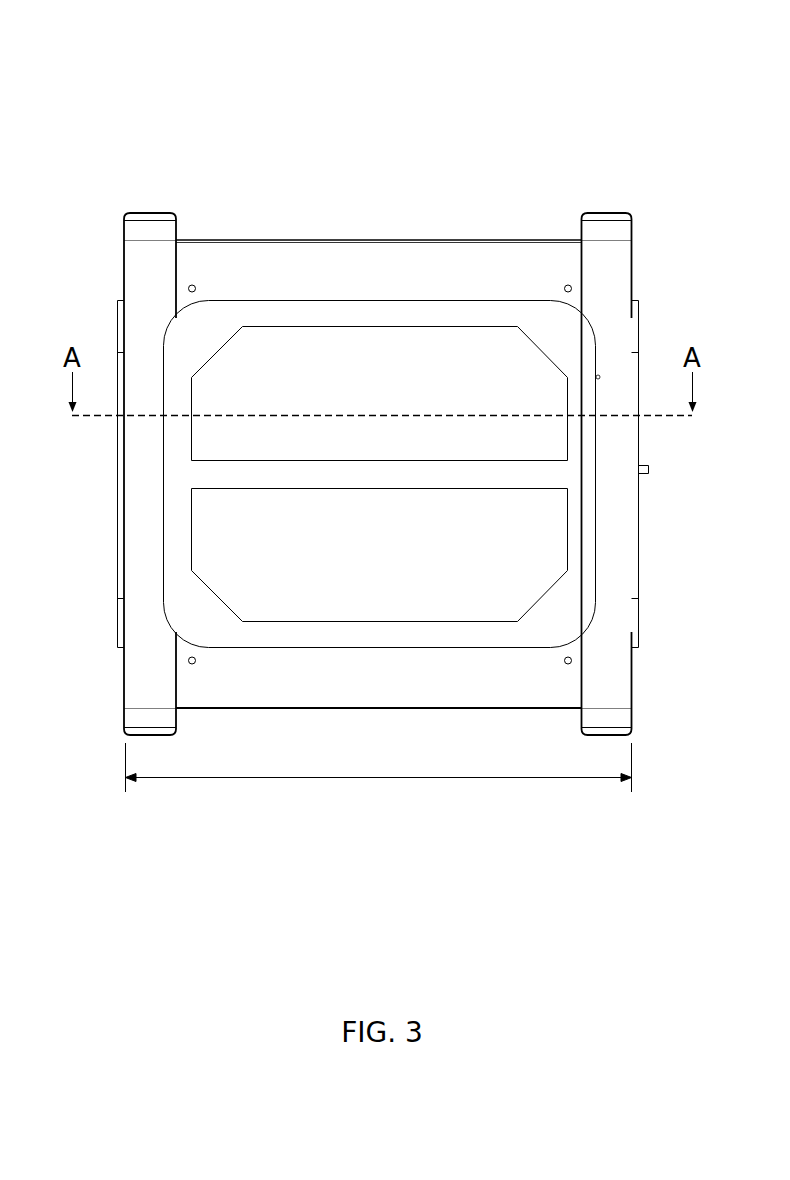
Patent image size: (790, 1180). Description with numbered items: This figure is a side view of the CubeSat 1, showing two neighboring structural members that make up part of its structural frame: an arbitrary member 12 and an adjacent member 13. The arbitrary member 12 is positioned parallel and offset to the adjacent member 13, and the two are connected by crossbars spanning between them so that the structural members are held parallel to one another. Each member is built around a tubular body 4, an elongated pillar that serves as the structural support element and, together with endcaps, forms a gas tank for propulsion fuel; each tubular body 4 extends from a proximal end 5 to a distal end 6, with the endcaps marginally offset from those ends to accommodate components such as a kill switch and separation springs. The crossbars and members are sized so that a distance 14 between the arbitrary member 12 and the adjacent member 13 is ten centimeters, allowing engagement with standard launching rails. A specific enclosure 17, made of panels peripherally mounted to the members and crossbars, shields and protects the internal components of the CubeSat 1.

The CubeSat 1 is at (420, 105).
The tubular body 4 is at (130, 514).
The proximal end 5 is at (86, 705).
The distal end 6 is at (90, 229).
The arbitrary member 12 is at (150, 203).
The adjacent member 13 is at (608, 208).
The distance 14 is at (388, 777).
The specific enclosure 17 is at (371, 536).